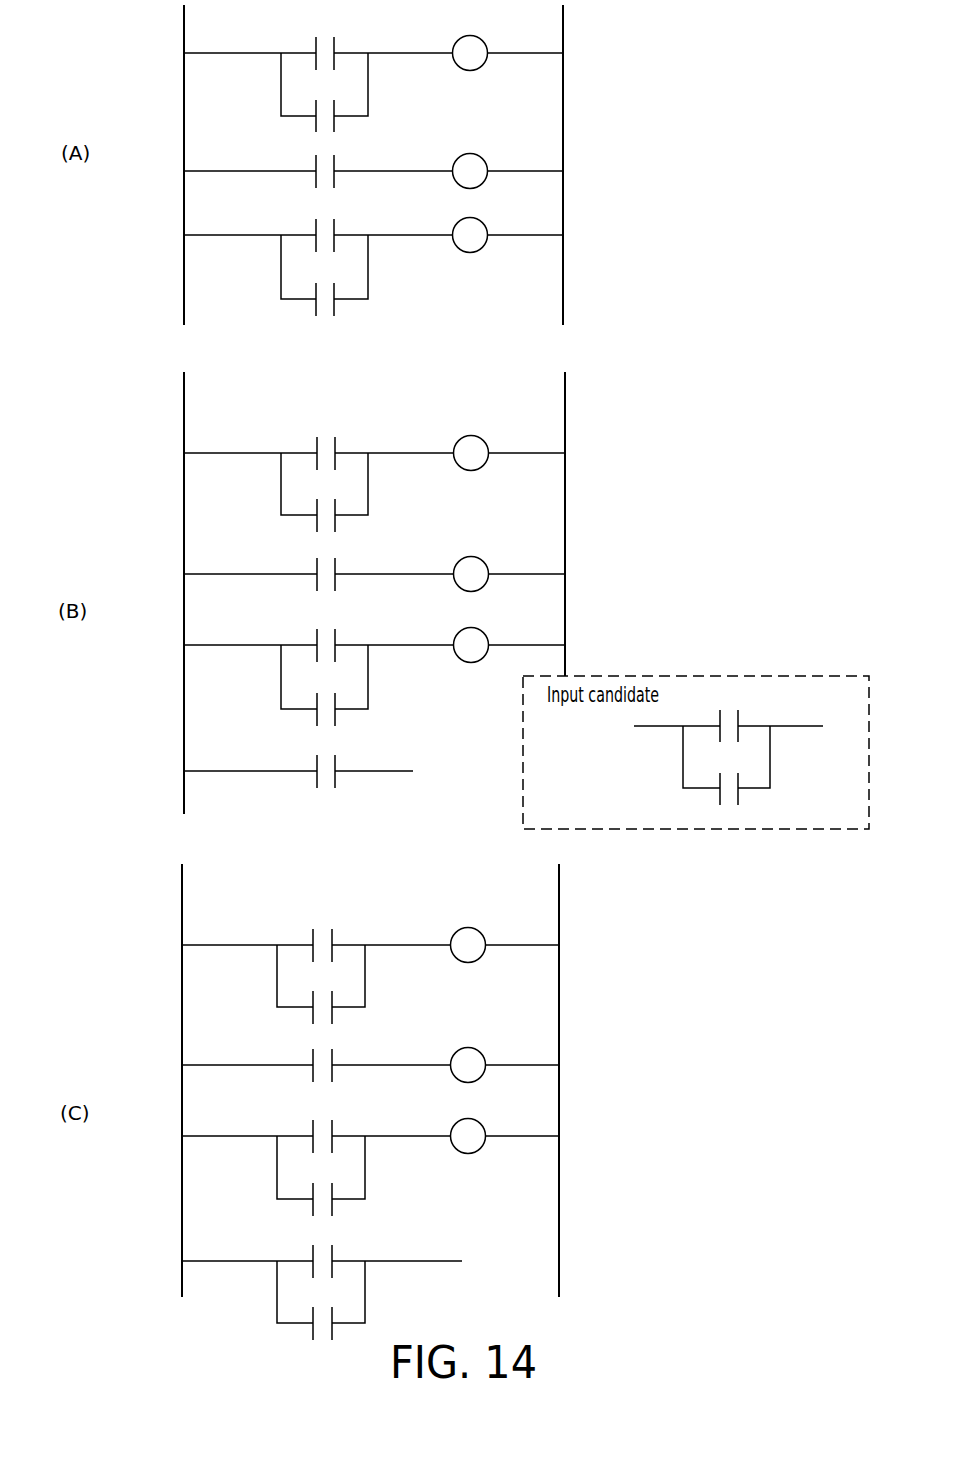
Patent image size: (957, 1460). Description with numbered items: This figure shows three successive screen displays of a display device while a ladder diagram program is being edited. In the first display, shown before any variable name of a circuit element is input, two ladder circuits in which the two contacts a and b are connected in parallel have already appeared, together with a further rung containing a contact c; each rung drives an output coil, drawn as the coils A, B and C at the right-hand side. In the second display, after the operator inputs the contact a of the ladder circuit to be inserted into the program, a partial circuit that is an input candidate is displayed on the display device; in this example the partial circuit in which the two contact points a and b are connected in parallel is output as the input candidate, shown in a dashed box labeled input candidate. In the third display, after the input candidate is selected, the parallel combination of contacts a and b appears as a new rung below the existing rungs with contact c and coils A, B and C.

The contact a is at (525, 643).
The contact b is at (525, 707).
The normally open contact c is at (324, 605).
The output coil A is at (470, 487).
The output coil B is at (470, 606).
The output coil C is at (470, 673).